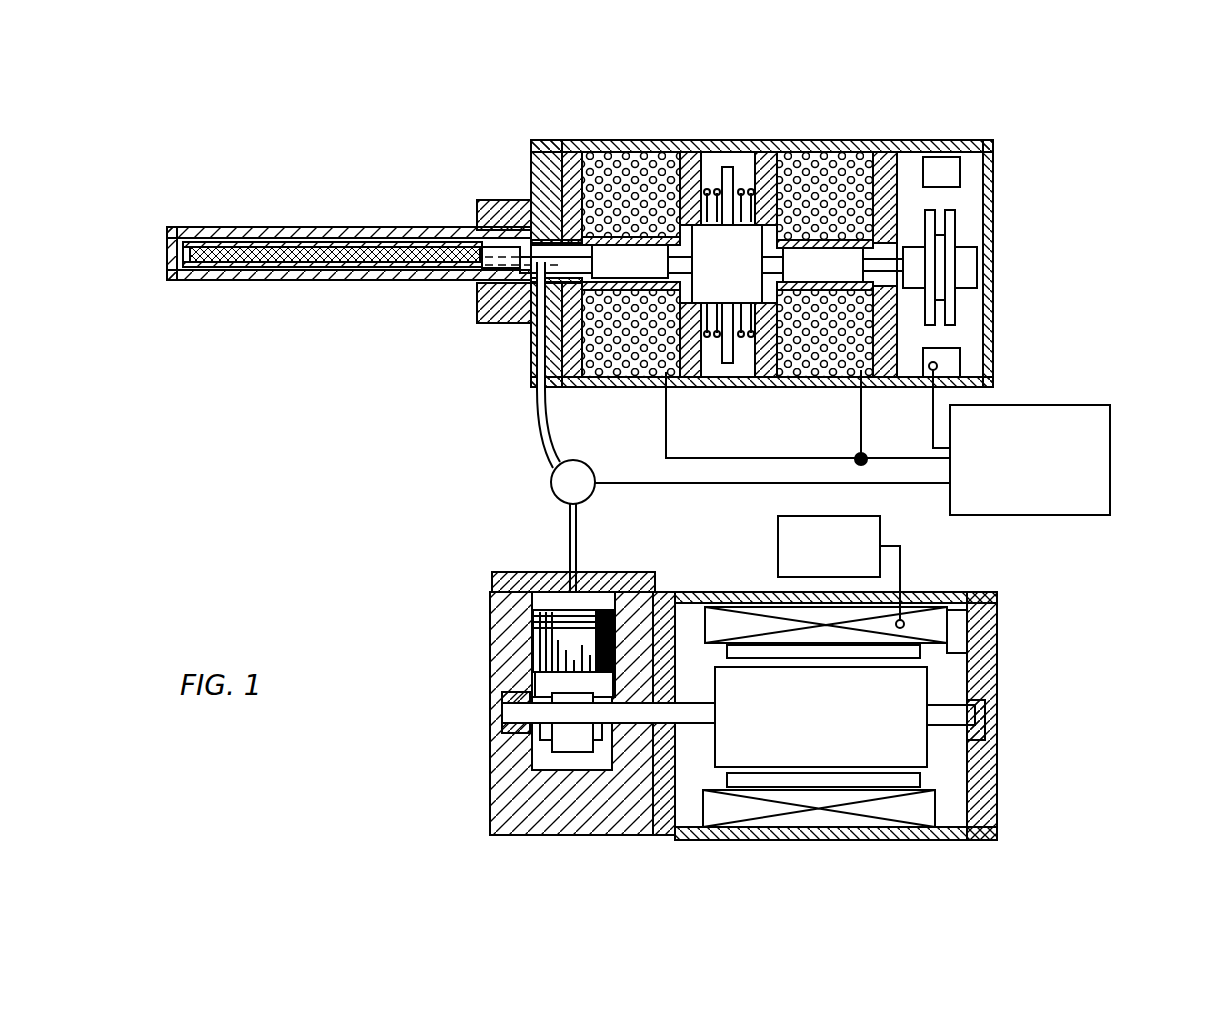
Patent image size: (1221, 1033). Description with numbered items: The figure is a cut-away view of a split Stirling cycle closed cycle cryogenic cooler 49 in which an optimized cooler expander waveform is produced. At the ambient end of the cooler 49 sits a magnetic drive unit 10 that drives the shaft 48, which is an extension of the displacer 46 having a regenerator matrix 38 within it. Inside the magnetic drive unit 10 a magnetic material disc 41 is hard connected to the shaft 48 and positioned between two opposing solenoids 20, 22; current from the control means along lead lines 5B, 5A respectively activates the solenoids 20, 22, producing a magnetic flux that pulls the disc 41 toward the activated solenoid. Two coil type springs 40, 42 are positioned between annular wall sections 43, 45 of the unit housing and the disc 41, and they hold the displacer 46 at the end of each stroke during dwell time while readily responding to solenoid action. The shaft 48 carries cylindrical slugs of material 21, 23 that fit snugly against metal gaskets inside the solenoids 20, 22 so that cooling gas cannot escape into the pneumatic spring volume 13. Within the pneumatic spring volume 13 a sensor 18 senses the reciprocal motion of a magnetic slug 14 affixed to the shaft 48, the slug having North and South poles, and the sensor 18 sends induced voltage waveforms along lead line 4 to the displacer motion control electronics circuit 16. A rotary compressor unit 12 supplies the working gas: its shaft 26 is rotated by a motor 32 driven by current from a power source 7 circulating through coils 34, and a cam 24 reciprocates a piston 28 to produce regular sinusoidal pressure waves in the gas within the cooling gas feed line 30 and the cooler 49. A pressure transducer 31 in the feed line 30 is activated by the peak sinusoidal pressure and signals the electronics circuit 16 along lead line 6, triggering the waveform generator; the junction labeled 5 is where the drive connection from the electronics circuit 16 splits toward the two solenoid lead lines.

The magnetic drive unit 10 is at (626, 130).
The rotary compressor unit 12 is at (518, 842).
The pneumatic spring volume 13 is at (968, 312).
The magnetic slug 14 is at (958, 220).
The displacer motion control electronics circuit 16 is at (1110, 455).
The sensor 18 is at (950, 160).
The solenoid 20 is at (648, 172).
The cylindrical slug of material 21 is at (630, 261).
The solenoid 22 is at (822, 170).
The cylindrical slug of material 23 is at (823, 265).
The cam 24 is at (540, 768).
The shaft 26 is at (520, 713).
The piston 28 is at (545, 640).
The cooling gas feed line 30 is at (545, 458).
The pressure transducer 31 is at (592, 470).
The motor 32 is at (920, 695).
The coils 34 is at (940, 648).
The regenerator matrix 38 is at (290, 262).
The coil type spring 40 is at (728, 165).
The magnetic material disc 41 is at (727, 265).
The coil type spring 42 is at (750, 190).
The annular wall section 43 is at (688, 168).
The annular wall section 45 is at (760, 172).
The displacer 46 is at (290, 240).
The shaft 48 is at (524, 238).
The cooler 49 is at (225, 230).
The lead line 4 is at (932, 434).
The drive signal node 5 is at (930, 462).
The lead line 5A is at (858, 428).
The lead line 5B is at (667, 426).
The lead line 6 is at (672, 486).
The power source 7 is at (777, 550).